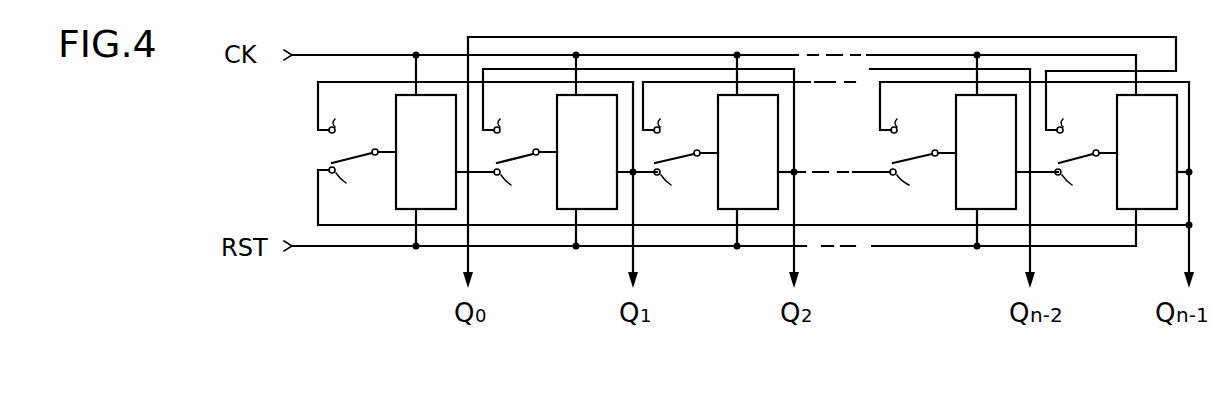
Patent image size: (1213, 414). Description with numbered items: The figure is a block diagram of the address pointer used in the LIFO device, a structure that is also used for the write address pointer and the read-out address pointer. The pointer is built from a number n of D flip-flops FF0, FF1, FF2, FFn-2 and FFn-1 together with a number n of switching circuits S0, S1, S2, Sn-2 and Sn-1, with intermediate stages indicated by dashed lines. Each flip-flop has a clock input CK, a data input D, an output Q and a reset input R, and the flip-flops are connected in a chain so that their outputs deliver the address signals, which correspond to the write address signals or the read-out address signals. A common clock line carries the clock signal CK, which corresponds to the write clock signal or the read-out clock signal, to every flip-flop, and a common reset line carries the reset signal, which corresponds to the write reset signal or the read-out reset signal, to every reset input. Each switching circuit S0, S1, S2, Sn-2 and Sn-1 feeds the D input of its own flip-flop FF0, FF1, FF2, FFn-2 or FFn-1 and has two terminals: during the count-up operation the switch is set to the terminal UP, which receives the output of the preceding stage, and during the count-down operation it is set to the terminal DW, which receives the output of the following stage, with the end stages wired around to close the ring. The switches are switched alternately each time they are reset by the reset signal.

The D flip-flop FF0 is at (394, 203).
The D flip-flop FF1 is at (557, 203).
The D flip-flop FF2 is at (716, 203).
The D flip-flop FFn-2 is at (954, 203).
The D flip-flop FFn-1 is at (1118, 201).
The switching circuit S0 is at (362, 154).
The switching circuit S1 is at (526, 154).
The switching circuit S2 is at (687, 154).
The switching circuit Sn-2 is at (919, 154).
The switching circuit Sn-1 is at (1083, 154).